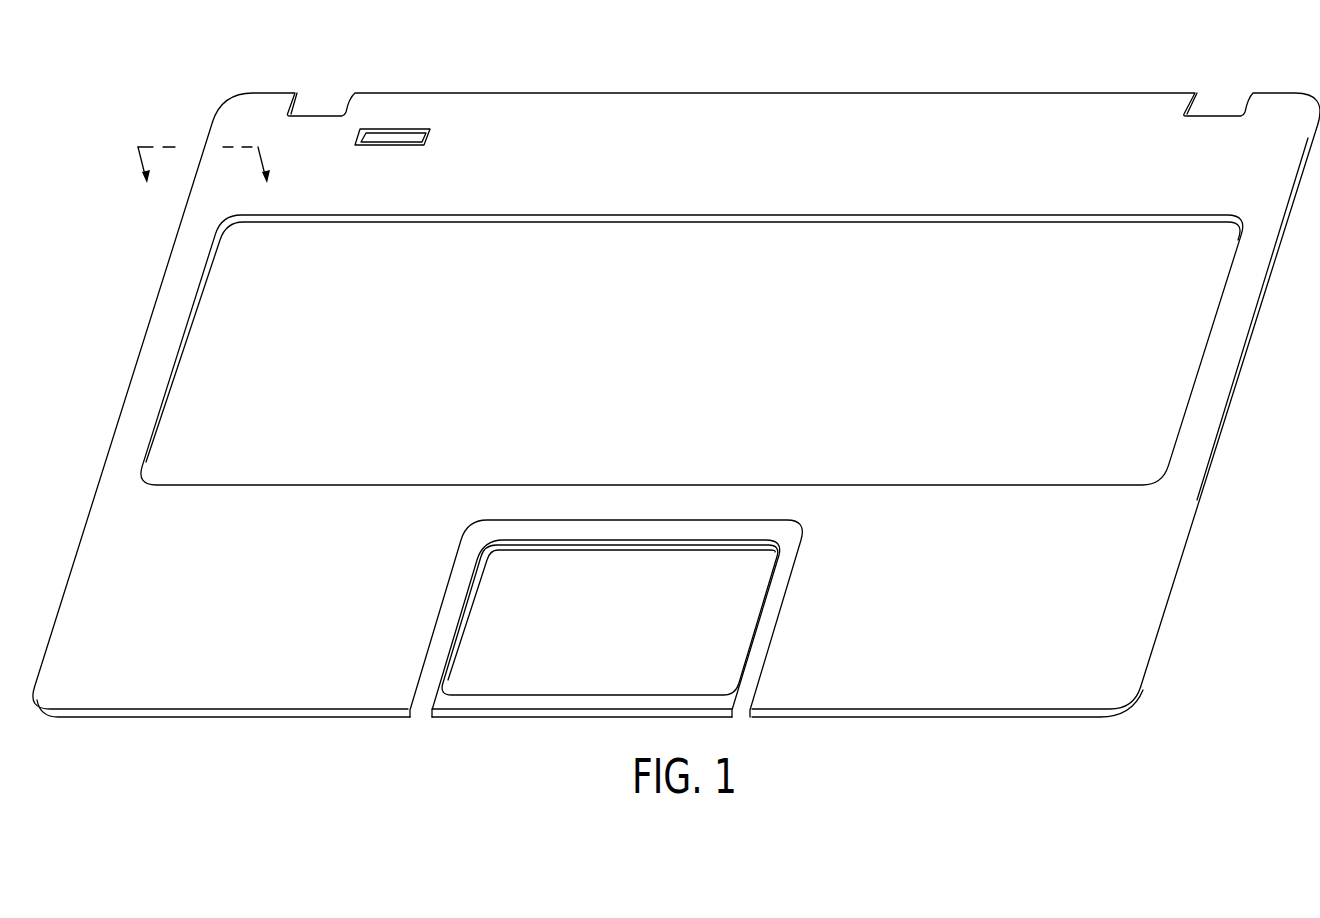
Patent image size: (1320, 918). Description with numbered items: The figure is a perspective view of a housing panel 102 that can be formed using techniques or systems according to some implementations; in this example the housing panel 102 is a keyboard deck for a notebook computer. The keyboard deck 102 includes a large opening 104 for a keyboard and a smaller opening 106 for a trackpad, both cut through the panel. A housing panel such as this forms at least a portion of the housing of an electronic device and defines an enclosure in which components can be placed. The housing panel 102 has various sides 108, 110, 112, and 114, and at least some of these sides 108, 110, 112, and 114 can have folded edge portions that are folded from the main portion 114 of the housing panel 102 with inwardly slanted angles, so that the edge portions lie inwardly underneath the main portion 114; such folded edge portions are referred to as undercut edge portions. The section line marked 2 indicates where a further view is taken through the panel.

The housing panel 102 is at (674, 410).
The opening for a keyboard 104 is at (183, 350).
The opening for a trackpad 106 is at (462, 618).
The side 108 is at (125, 403).
The side 110 is at (775, 93).
The side 112 is at (1233, 415).
The side 114 is at (1142, 555).
The section line for FIG. 2 is at (206, 181).